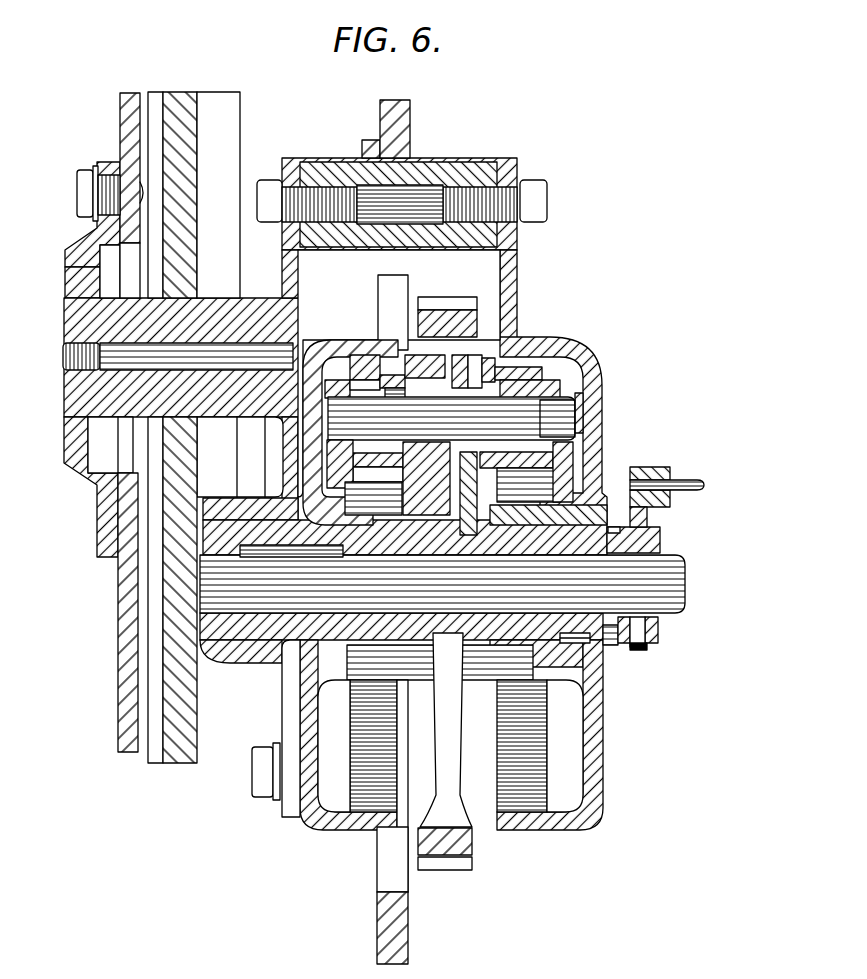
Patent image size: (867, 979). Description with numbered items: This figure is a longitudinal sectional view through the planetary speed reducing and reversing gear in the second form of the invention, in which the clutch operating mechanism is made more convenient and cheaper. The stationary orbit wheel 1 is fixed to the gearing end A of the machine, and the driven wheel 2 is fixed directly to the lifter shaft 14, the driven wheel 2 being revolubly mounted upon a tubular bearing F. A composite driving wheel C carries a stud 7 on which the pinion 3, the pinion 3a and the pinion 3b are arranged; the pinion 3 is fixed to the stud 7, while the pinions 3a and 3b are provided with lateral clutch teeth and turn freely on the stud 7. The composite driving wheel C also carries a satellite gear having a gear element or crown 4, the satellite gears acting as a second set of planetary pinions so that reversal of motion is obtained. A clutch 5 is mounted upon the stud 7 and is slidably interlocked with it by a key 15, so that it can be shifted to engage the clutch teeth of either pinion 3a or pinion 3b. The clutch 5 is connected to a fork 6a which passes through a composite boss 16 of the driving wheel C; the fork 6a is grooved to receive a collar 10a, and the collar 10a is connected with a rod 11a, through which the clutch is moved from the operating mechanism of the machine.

The stationary orbit wheel 1 is at (585, 340).
The driven wheel 2 is at (318, 340).
The pinion 3 is at (398, 358).
The pinion 3a is at (425, 358).
The pinion 3b is at (527, 363).
The gear element 4 is at (580, 440).
The clutch 5 is at (472, 362).
The fork 6a is at (558, 480).
The stud 7 is at (552, 420).
The collar 10a is at (670, 467).
The rod 11a is at (707, 480).
The lifter shaft 14 is at (317, 615).
The key 15 is at (513, 357).
The composite boss 16 is at (378, 378).
The gearing end of the machine A is at (410, 121).
The tubular bearing F is at (288, 800).
The composite driving wheel C is at (457, 869).